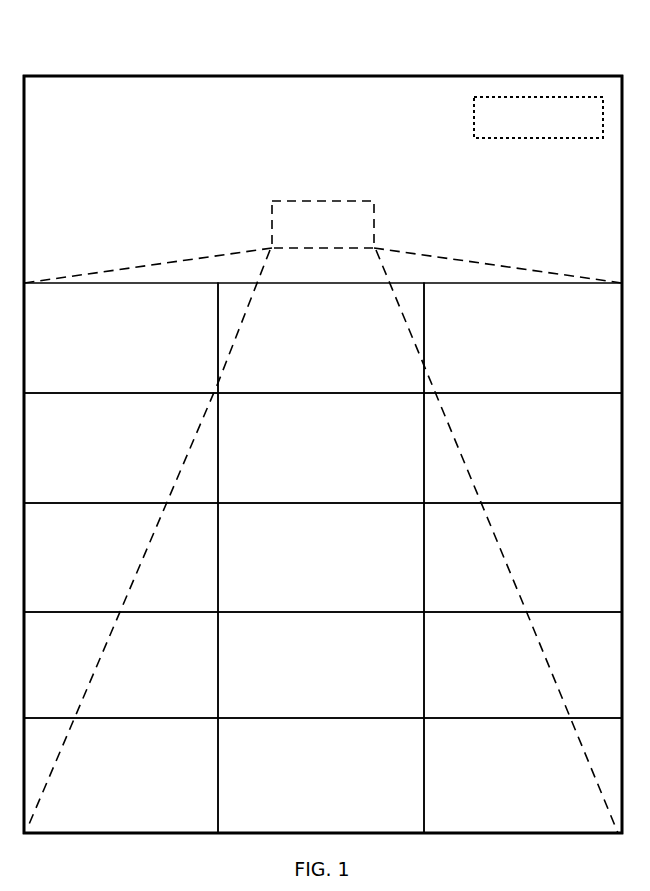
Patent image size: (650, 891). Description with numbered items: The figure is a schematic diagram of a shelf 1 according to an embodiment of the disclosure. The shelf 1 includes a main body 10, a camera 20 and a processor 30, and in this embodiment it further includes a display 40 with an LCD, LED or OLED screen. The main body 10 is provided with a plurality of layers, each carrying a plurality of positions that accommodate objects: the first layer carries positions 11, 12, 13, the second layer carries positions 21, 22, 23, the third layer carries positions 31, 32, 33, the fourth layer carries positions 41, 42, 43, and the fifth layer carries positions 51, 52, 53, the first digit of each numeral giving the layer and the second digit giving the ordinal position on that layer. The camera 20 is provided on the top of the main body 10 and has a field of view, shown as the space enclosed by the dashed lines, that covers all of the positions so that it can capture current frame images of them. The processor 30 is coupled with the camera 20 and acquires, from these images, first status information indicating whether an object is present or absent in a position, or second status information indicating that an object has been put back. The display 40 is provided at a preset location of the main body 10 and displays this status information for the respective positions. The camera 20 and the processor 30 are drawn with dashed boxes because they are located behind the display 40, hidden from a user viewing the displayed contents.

The shelf 1 is at (318, 61).
The main body 10 is at (513, 75).
The camera 20 is at (357, 202).
The processor 30 is at (538, 117).
The display 40 is at (323, 454).
The position 11 is at (121, 338).
The position 12 is at (321, 338).
The position 13 is at (523, 338).
The position 21 is at (121, 448).
The position 22 is at (321, 448).
The position 23 is at (523, 448).
The position 31 is at (121, 557).
The position 32 is at (321, 557).
The position 33 is at (523, 557).
The position 41 is at (121, 665).
The position 42 is at (321, 665).
The position 43 is at (523, 665).
The position 51 is at (121, 775).
The position 52 is at (321, 775).
The position 53 is at (523, 775).